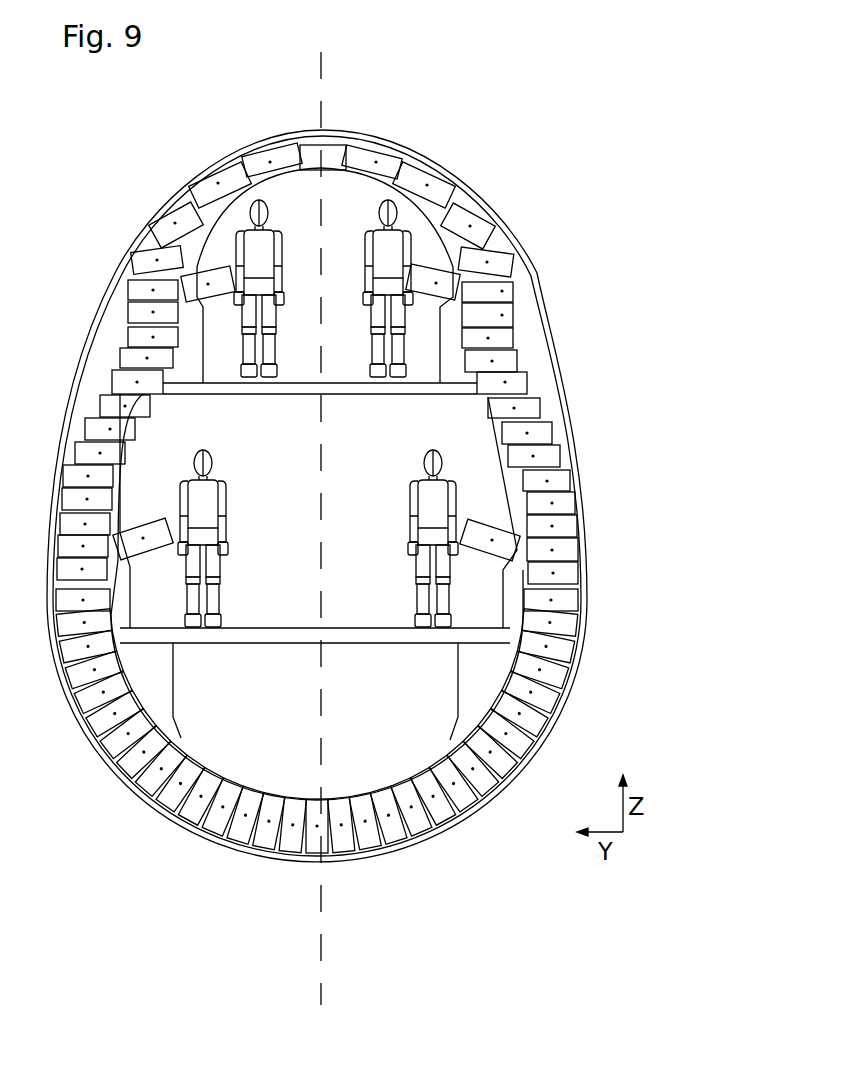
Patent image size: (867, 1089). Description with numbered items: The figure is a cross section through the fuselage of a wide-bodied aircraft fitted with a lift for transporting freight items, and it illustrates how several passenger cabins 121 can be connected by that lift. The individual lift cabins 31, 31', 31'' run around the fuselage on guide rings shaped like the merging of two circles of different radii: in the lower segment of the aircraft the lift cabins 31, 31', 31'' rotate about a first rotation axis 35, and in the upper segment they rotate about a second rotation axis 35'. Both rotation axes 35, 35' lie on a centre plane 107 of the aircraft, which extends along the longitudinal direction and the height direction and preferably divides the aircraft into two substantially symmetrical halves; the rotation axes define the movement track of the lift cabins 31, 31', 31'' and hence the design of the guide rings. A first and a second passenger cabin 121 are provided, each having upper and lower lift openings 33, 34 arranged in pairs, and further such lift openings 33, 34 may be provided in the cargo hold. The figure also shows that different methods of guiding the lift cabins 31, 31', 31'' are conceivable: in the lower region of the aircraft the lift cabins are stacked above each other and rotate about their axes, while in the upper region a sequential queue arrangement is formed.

The lift cabin 31 is at (577, 263).
The lift cabin 31' is at (584, 317).
The lift cabin 31'' is at (586, 351).
The upper lift opening 33 is at (452, 280).
The lower lift opening 34 is at (520, 553).
The first rotation axis 35 is at (282, 597).
The second rotation axis 35' is at (288, 297).
The centre plane 107 is at (317, 900).
The passenger cabin 121 is at (490, 400).